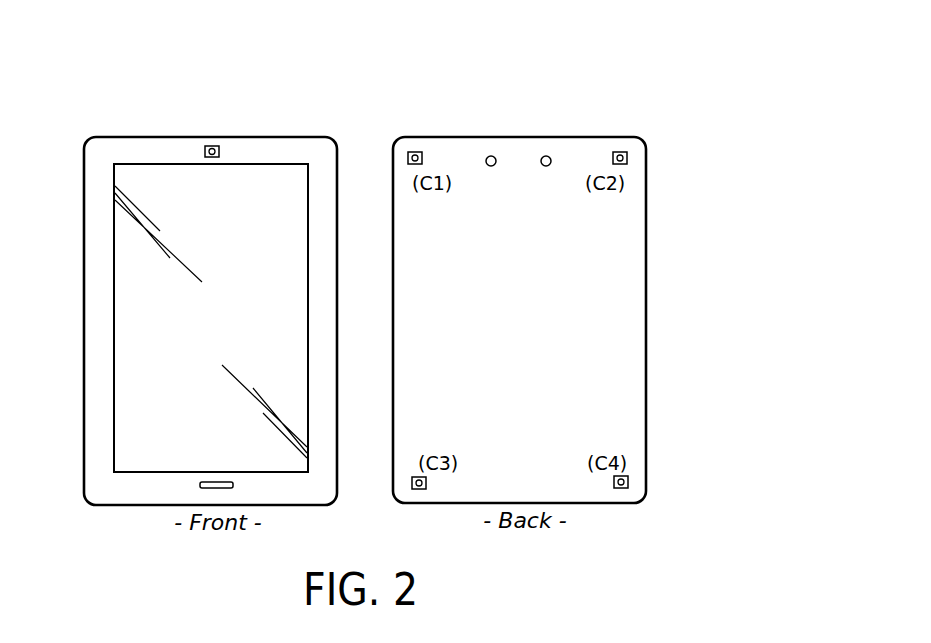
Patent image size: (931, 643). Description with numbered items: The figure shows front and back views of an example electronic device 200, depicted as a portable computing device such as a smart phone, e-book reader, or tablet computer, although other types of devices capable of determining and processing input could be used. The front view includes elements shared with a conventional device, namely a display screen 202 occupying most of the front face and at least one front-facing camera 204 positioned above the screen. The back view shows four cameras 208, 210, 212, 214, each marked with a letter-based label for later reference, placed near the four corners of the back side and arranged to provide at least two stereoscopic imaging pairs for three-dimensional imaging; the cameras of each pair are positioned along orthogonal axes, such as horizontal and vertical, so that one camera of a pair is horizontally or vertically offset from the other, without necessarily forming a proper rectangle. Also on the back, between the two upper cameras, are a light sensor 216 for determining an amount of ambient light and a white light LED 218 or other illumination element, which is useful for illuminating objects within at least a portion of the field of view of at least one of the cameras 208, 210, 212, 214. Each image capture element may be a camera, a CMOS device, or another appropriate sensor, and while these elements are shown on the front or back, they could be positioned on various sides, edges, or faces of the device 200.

The electronic device 200 is at (741, 142).
The display screen 202 is at (114, 174).
The front-facing camera 204 is at (212, 145).
The camera 208 is at (414, 150).
The camera 210 is at (626, 163).
The camera 212 is at (422, 489).
The camera 214 is at (629, 481).
The light sensor 216 is at (491, 155).
The white light LED 218 is at (546, 155).